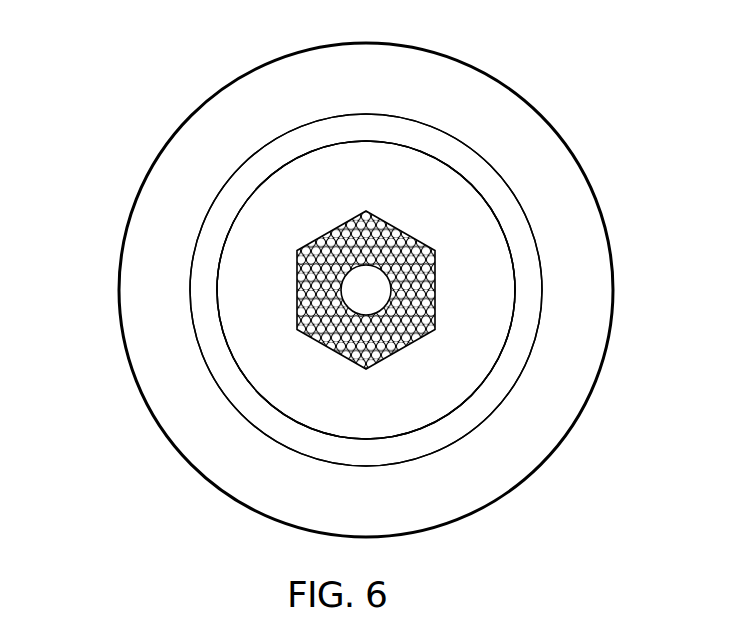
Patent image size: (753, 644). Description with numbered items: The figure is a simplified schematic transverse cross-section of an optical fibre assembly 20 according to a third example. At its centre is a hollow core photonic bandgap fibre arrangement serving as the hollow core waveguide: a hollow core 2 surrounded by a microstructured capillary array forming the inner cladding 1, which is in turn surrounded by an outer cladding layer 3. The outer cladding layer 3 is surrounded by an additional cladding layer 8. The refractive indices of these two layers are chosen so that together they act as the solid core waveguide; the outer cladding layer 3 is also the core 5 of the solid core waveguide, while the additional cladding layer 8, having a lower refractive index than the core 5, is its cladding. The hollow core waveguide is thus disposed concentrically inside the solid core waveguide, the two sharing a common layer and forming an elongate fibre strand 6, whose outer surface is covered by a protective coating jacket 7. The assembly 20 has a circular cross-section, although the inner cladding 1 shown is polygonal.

The assembly 20 is at (219, 46).
The inner cladding 1 is at (295, 253).
The hollow core 2 is at (365, 290).
The outer cladding layer 3 is at (233, 280).
The core 5 is at (272, 368).
The fibre strand 6 is at (272, 142).
The jacket 7 is at (150, 378).
The additional cladding layer 8 is at (202, 298).